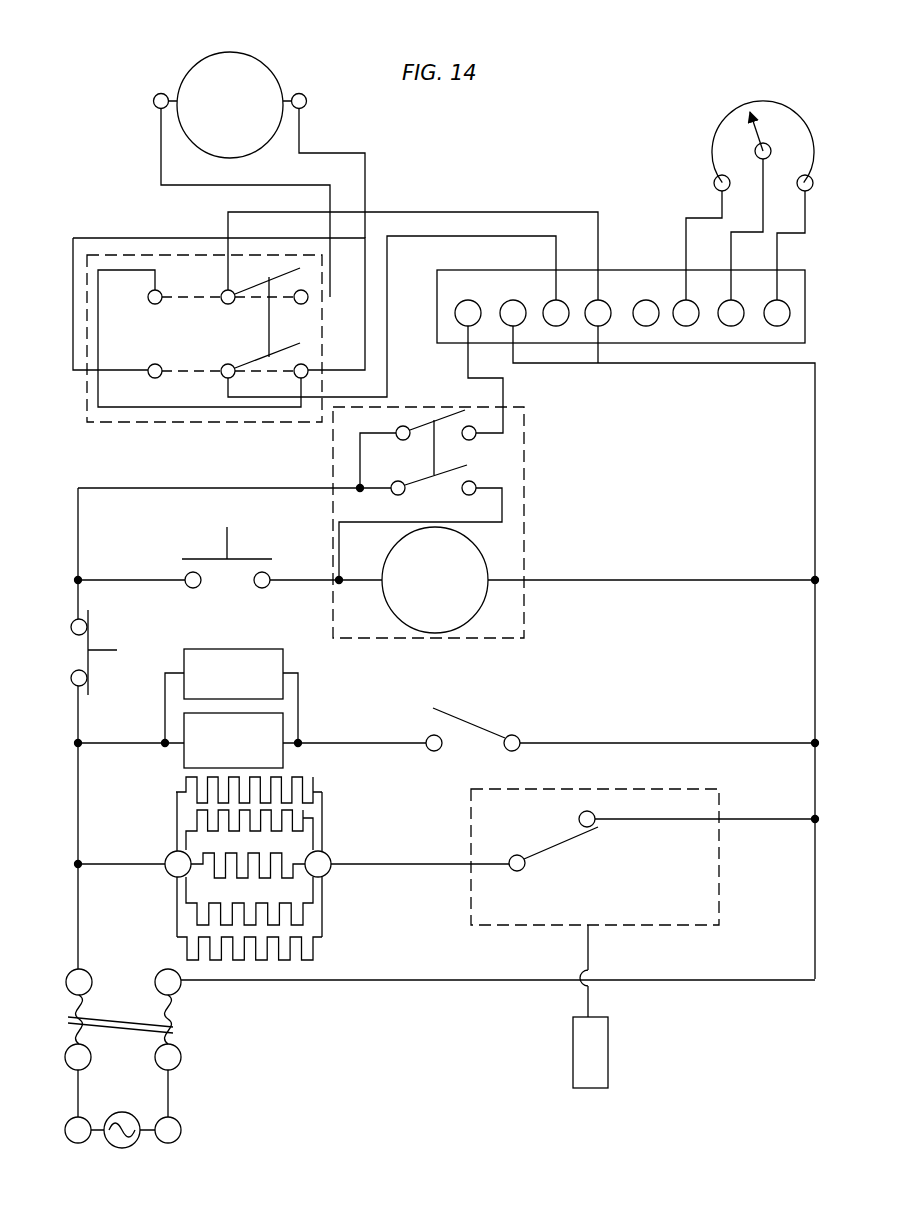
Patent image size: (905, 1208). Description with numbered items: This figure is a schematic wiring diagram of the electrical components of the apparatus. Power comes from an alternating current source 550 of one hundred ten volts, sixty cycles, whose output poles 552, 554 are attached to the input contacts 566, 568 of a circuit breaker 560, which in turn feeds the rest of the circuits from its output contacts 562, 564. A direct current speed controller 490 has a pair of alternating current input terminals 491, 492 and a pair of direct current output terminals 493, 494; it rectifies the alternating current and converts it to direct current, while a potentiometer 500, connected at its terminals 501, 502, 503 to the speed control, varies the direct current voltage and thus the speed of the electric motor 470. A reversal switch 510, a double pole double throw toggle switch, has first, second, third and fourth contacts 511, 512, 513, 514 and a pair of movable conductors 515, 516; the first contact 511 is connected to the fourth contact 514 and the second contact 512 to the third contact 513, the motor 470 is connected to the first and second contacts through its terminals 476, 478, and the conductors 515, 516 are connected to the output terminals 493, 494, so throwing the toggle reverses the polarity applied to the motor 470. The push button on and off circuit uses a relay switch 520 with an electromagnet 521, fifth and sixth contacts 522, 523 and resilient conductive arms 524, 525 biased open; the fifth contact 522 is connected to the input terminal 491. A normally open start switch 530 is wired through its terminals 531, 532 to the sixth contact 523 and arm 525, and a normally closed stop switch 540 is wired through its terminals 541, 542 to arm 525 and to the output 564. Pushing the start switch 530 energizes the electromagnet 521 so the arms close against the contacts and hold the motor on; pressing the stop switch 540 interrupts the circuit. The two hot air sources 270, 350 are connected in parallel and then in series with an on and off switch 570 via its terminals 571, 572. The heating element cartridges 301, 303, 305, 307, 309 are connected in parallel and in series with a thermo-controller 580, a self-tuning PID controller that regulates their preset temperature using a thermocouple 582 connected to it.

The electric motor 470 is at (212, 50).
The motor terminal 476 is at (154, 96).
The motor terminal 478 is at (305, 95).
The reversal switch 510 is at (108, 248).
The first contact 511 is at (308, 302).
The second contact 512 is at (306, 366).
The third contact 513 is at (162, 305).
The fourth contact 514 is at (148, 366).
The movable conductor 515 is at (272, 268).
The movable conductor 516 is at (258, 372).
The direct current speed controller 490 is at (644, 268).
The alternating current input terminal 491 is at (462, 300).
The alternating current input terminal 492 is at (512, 300).
The direct current output terminal 493 is at (611, 347).
The direct current output terminal 494 is at (646, 326).
The potentiometer terminal 501 is at (690, 326).
The potentiometer terminal 502 is at (733, 326).
The potentiometer terminal 503 is at (779, 326).
The potentiometer 500 is at (795, 95).
The relay switch 520 is at (530, 443).
The electromagnet 521 is at (462, 615).
The fifth contact 522 is at (478, 425).
The sixth contact 523 is at (478, 485).
The resilient conductive arm 524 is at (420, 425).
The resilient conductive arm 525 is at (427, 487).
The push button start switch 530 is at (252, 545).
The start switch terminal 531 is at (186, 572).
The start switch terminal 532 is at (262, 590).
The push button stop switch 540 is at (102, 662).
The stop switch terminal 541 is at (70, 625).
The stop switch terminal 542 is at (70, 677).
The hot air source 270 is at (216, 660).
The hot air source 350 is at (270, 726).
The on and off switch 570 is at (494, 716).
The on and off switch terminal 571 is at (428, 735).
The on and off switch terminal 572 is at (520, 737).
The thermo-controller 580 is at (652, 787).
The thermocouple 582 is at (614, 1044).
The heating element cartridge 301 is at (323, 784).
The heating element cartridge 303 is at (305, 820).
The heating element cartridge 305 is at (298, 855).
The heating element cartridge 307 is at (315, 902).
The heating element cartridge 309 is at (315, 950).
The circuit breaker 560 is at (187, 1006).
The output contact 562 is at (91, 976).
The output contact 564 is at (160, 968).
The input contact 566 is at (92, 1055).
The input contact 568 is at (182, 1054).
The alternating current source 550 is at (136, 1145).
The output pole 552 is at (83, 1118).
The output pole 554 is at (182, 1125).